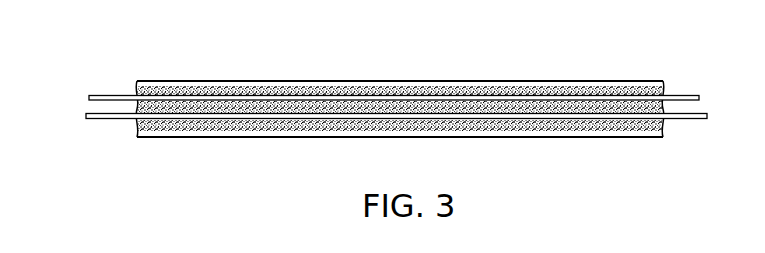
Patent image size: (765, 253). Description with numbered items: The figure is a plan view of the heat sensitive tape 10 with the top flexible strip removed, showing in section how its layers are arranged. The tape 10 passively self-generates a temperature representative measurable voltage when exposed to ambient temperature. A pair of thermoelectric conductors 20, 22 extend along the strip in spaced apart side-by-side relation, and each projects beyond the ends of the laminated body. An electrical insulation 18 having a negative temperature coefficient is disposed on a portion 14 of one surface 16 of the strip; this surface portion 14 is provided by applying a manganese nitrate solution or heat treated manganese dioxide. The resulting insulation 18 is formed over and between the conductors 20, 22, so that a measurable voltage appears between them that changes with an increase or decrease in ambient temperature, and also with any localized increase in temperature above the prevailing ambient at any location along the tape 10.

The heat sensitive tape 10 is at (352, 64).
The surface portion 14 is at (172, 108).
The surface 16 is at (262, 89).
The electrical insulation 18 is at (422, 88).
The thermoelectric conductor 20 is at (105, 96).
The thermoelectric conductor 22 is at (113, 119).